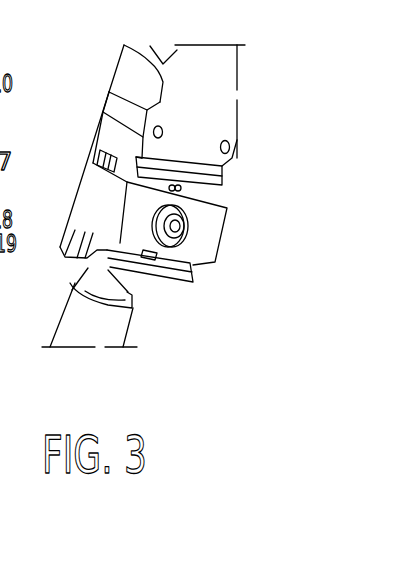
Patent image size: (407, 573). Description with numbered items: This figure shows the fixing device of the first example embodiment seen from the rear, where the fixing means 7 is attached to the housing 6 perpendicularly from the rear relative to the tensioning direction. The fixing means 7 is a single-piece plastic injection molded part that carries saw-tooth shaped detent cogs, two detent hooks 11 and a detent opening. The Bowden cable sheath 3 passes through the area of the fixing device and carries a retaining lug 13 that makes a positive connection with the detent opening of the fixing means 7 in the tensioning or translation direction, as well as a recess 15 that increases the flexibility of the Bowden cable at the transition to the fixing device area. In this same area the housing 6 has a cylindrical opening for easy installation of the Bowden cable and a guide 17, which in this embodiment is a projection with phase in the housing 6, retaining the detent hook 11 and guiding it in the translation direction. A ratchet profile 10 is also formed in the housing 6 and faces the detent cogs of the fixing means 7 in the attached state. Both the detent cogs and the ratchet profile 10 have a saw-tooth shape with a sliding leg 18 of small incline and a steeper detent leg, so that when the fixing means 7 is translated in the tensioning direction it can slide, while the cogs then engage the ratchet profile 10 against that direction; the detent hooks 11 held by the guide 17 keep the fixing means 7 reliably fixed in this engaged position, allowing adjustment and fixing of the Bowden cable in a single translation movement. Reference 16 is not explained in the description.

The Bowden cable sheath 3 is at (107, 330).
The housing 6 is at (122, 46).
The fixing means 7 is at (210, 225).
The ratchet profile 10 is at (238, 151).
The detent hook 11 is at (98, 164).
The retaining lug 13 is at (181, 231).
The recess 15 is at (72, 283).
The fastening screw 16 is at (175, 180).
The guide 17 is at (100, 116).
The sliding leg 18 is at (218, 183).